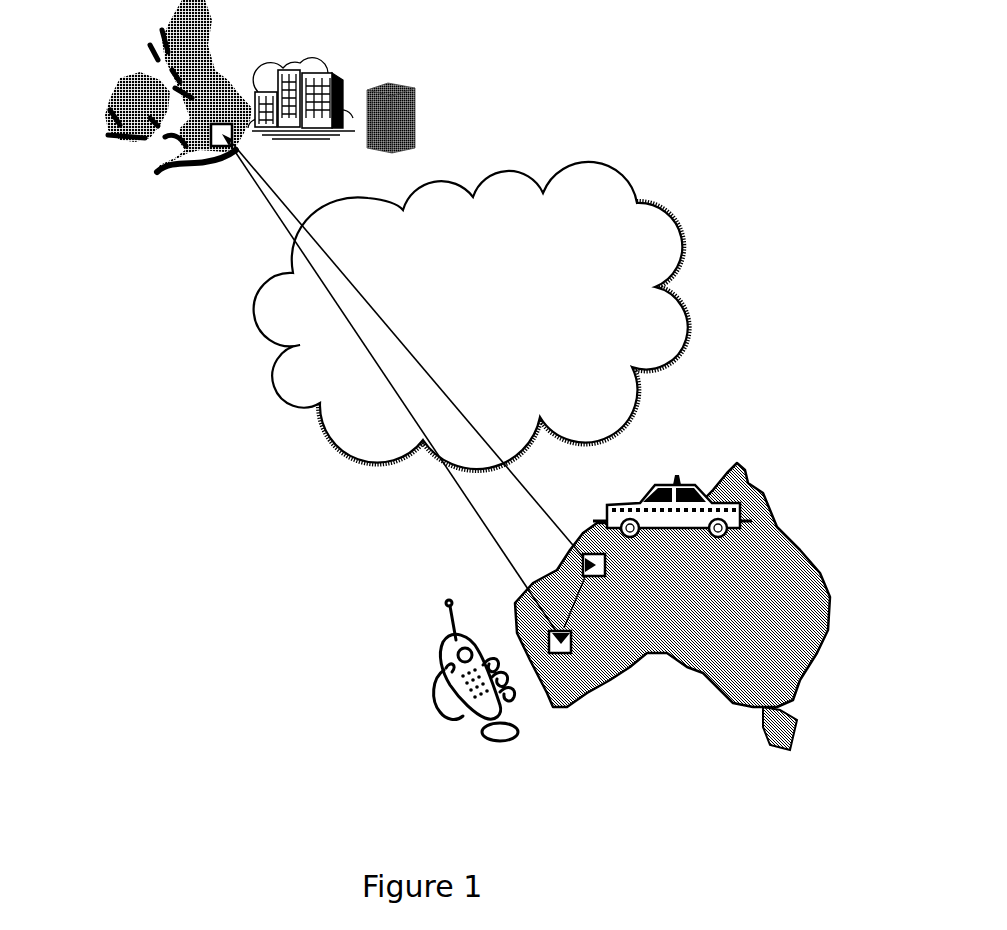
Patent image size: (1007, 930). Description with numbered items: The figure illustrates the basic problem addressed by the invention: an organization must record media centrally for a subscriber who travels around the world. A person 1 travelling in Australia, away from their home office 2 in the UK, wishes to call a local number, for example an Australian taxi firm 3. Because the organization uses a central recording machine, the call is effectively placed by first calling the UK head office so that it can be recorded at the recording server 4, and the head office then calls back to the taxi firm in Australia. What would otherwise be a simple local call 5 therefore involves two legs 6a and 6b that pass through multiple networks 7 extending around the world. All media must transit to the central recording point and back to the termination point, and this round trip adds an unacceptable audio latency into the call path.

The person 1 is at (400, 695).
The home office 2 is at (711, 448).
The taxi firm 3 is at (368, 71).
The recording server 4 is at (438, 105).
The local call 5 is at (598, 618).
The first leg 6a is at (448, 505).
The second leg 6b is at (539, 474).
The networks 7 is at (253, 388).